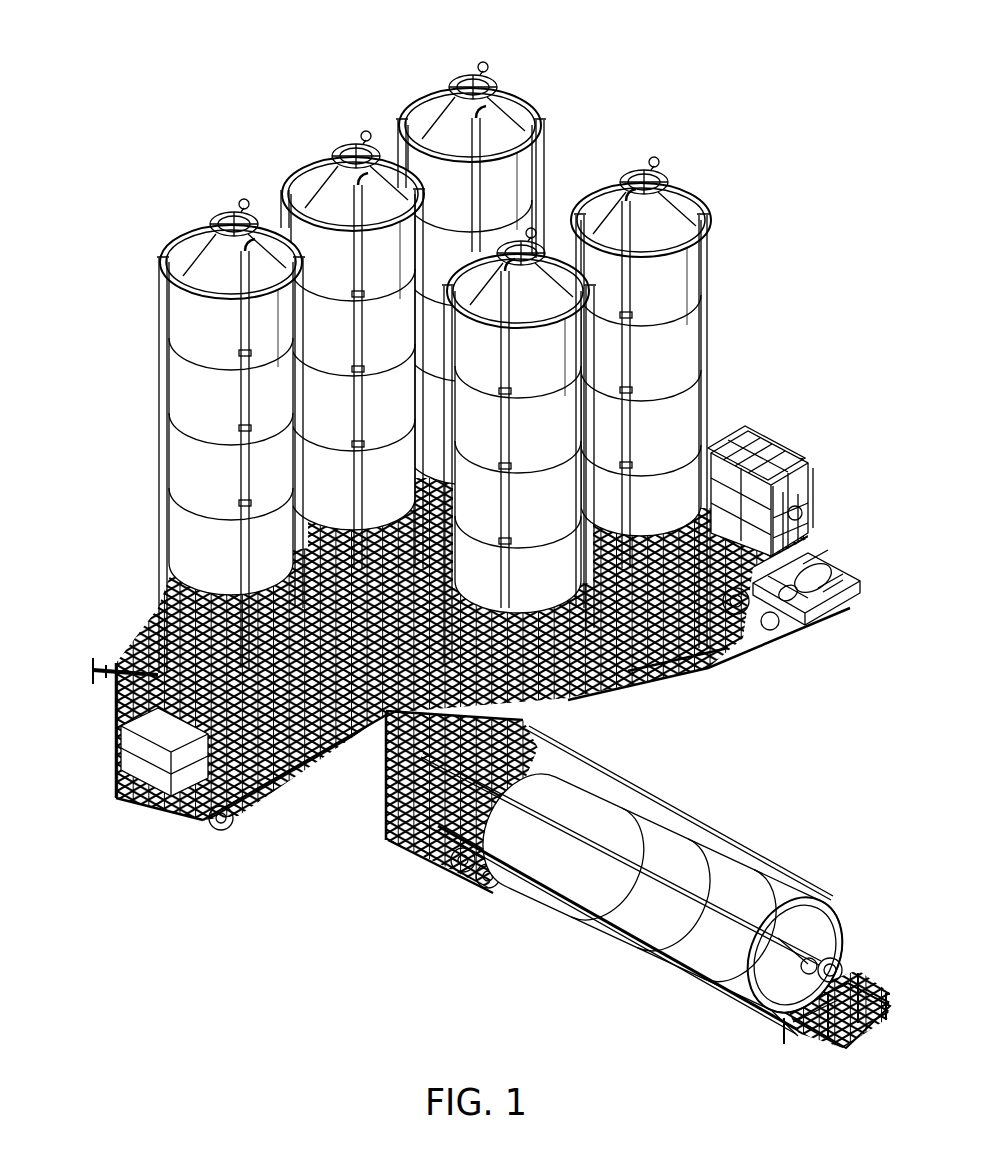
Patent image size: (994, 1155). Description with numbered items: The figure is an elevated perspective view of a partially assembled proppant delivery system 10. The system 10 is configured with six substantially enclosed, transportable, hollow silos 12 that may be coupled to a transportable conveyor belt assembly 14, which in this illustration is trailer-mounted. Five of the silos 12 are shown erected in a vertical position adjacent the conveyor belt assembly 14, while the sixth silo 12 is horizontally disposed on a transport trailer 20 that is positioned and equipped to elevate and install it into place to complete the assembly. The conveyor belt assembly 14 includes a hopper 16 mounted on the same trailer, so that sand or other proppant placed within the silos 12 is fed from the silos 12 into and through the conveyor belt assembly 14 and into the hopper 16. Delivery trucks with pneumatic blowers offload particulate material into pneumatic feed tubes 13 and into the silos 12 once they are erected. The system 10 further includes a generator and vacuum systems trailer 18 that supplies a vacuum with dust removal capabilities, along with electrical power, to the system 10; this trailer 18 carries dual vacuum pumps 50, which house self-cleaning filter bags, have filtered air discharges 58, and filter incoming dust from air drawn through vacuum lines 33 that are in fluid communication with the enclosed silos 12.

The proppant delivery system 10 is at (667, 73).
The silo 12 is at (300, 180).
The pneumatic feed tube 13 is at (386, 155).
The conveyor belt assembly 14 is at (310, 762).
The hopper 16 is at (117, 728).
The generator and vacuum systems trailer 18 is at (820, 550).
The transport trailer 20 is at (443, 853).
The vacuum line 33 is at (349, 195).
The vacuum pump 50 is at (710, 428).
The filtered air discharge 58 is at (783, 463).